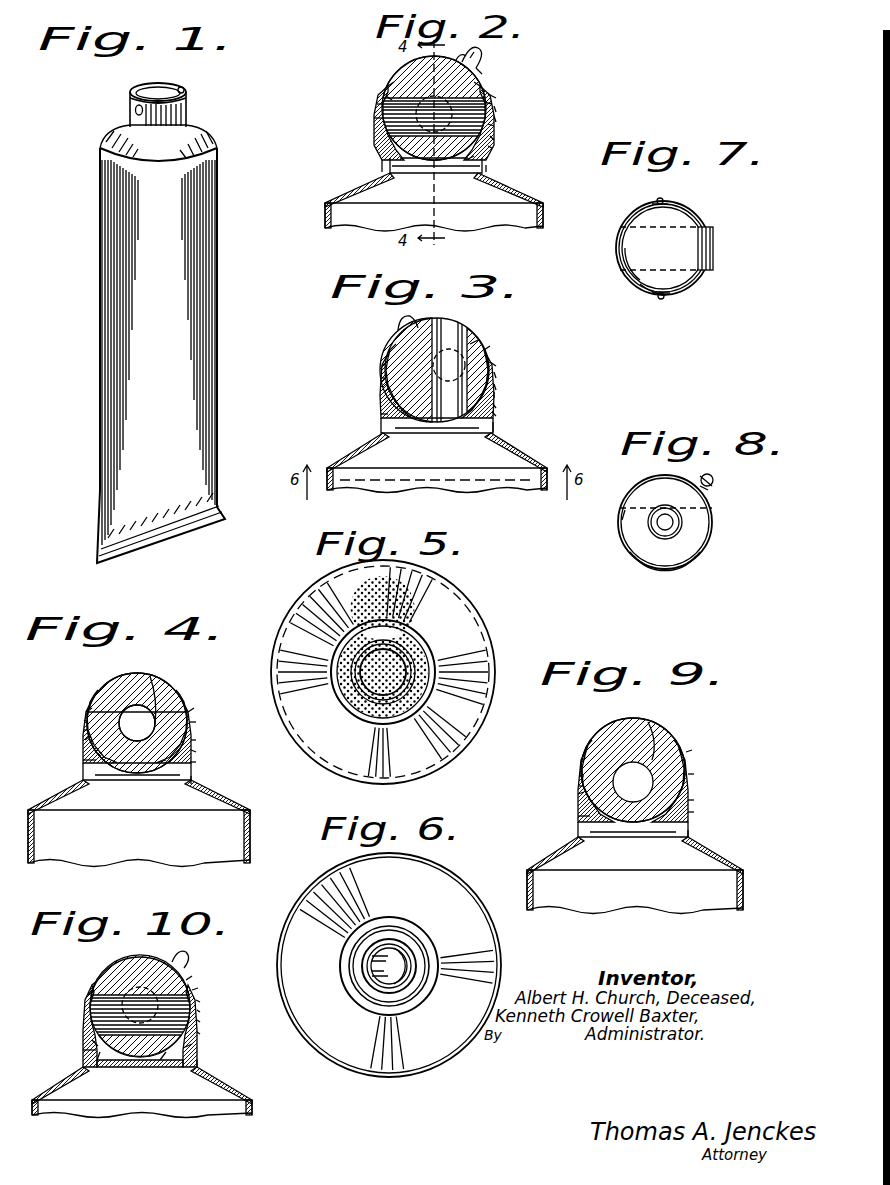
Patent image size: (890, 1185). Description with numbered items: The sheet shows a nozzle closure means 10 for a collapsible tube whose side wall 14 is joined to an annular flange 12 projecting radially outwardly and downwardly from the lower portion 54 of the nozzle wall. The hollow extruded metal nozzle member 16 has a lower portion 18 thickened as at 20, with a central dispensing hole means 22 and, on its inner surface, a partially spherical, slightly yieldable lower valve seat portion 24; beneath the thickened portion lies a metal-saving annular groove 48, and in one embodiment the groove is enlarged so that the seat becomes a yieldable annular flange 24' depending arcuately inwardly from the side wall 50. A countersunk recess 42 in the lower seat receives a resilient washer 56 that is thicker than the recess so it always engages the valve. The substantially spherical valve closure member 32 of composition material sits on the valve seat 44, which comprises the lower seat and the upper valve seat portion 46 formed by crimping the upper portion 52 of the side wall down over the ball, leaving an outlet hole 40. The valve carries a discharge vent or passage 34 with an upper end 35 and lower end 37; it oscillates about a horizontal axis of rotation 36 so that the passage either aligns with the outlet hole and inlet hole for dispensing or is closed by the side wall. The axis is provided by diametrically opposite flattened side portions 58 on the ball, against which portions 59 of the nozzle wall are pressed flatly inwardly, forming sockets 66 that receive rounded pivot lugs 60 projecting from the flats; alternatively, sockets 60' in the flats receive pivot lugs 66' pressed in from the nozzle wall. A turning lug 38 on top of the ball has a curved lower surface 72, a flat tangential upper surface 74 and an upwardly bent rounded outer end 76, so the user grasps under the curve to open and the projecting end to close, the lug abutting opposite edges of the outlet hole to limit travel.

In FIG. 1, the nozzle closure means 10 is at (188, 118).
In FIG. 2, the nozzle closure means 10 is at (378, 116).
In FIG. 3, the nozzle closure means 10 is at (382, 392).
In FIG. 4, the nozzle closure means 10 is at (83, 746).
In FIG. 5, the nozzle closure means 10 is at (364, 622).
In FIG. 9, the nozzle closure means 10 is at (578, 806).
In FIG. 10, the nozzle closure means 10 is at (84, 1022).
In FIG. 1, the annular flange 12 is at (215, 142).
In FIG. 2, the annular flange 12 is at (362, 187).
In FIG. 3, the annular flange 12 is at (362, 450).
In FIG. 4, the annular flange 12 is at (56, 792).
In FIG. 5, the annular flange 12 is at (312, 602).
In FIG. 6, the annular flange 12 is at (346, 892).
In FIG. 9, the annular flange 12 is at (560, 854).
In FIG. 10, the annular flange 12 is at (62, 1086).
In FIG. 1, the side wall 14 is at (100, 246).
In FIG. 2, the side wall 14 is at (330, 216).
In FIG. 3, the side wall 14 is at (330, 470).
In FIG. 4, the side wall 14 is at (30, 840).
In FIG. 6, the side wall 14 is at (334, 906).
In FIG. 9, the side wall 14 is at (530, 886).
In FIG. 10, the side wall 14 is at (40, 1116).
In FIG. 1, the nozzle member 16 is at (186, 108).
In FIG. 2, the nozzle member 16 is at (494, 108).
In FIG. 3, the nozzle member 16 is at (494, 374).
In FIG. 4, the nozzle member 16 is at (86, 716).
In FIG. 10, the nozzle member 16 is at (196, 1000).
In FIG. 2, the lower portion 18 is at (494, 137).
In FIG. 3, the lower portion 18 is at (496, 393).
In FIG. 4, the lower portion 18 is at (194, 740).
In FIG. 9, the lower portion 18 is at (690, 801).
In FIG. 2, the thickened portion 20 is at (492, 147).
In FIG. 3, the thickened portion 20 is at (496, 413).
In FIG. 4, the thickened portion 20 is at (194, 762).
In FIG. 9, the thickened portion 20 is at (690, 812).
In FIG. 2, the central dispensing hole means 22 is at (456, 170).
In FIG. 4, the central dispensing hole means 22 is at (162, 780).
In FIG. 10, the central dispensing hole means 22 is at (162, 1062).
In FIG. 2, the lower valve seat portion 24 is at (512, 121).
In FIG. 3, the lower valve seat portion 24 is at (532, 403).
In FIG. 4, the lower valve seat portion 24 is at (226, 747).
In FIG. 10, the lower valve seat portion 24 is at (227, 1035).
In FIG. 10, the annular flange (lower valve seat) 24' is at (231, 1054).
In FIG. 1, the valve closure member 32 is at (150, 86).
In FIG. 2, the valve closure member 32 is at (396, 72).
In FIG. 3, the valve closure member 32 is at (386, 360).
In FIG. 4, the valve closure member 32 is at (112, 674).
In FIG. 7, the valve closure member 32 is at (642, 218).
In FIG. 8, the valve closure member 32 is at (652, 492).
In FIG. 9, the valve closure member 32 is at (612, 728).
In FIG. 10, the valve closure member 32 is at (116, 966).
In FIG. 2, the discharge vent or passage 34 is at (386, 98).
In FIG. 3, the discharge vent or passage 34 is at (470, 346).
In FIG. 4, the discharge vent or passage 34 is at (152, 674).
In FIG. 6, the discharge vent or passage 34 is at (386, 976).
In FIG. 7, the discharge vent or passage 34 is at (636, 290).
In FIG. 8, the discharge vent or passage 34 is at (624, 524).
In FIG. 9, the discharge vent or passage 34 is at (670, 738).
In FIG. 10, the discharge vent or passage 34 is at (190, 972).
In FIG. 2, the upper end 35 is at (378, 106).
In FIG. 3, the upper end 35 is at (440, 422).
In FIG. 2, the axis of rotation 36 is at (380, 130).
In FIG. 4, the axis of rotation 36 is at (85, 722).
In FIG. 10, the axis of rotation 36 is at (86, 1002).
In FIG. 2, the lower end 37 is at (490, 102).
In FIG. 3, the lower end 37 is at (452, 324).
In FIG. 1, the turning lug 38 is at (182, 87).
In FIG. 2, the turning lug 38 is at (478, 52).
In FIG. 3, the turning lug 38 is at (402, 322).
In FIG. 7, the turning lug 38 is at (714, 250).
In FIG. 8, the turning lug 38 is at (714, 480).
In FIG. 10, the turning lug 38 is at (186, 956).
In FIG. 2, the outlet hole 40 is at (386, 84).
In FIG. 3, the outlet hole 40 is at (490, 350).
In FIG. 4, the outlet hole 40 is at (178, 692).
In FIG. 9, the outlet hole 40 is at (684, 756).
In FIG. 10, the outlet hole 40 is at (100, 978).
In FIG. 2, the countersunk recess 42 is at (488, 168).
In FIG. 3, the countersunk recess 42 is at (384, 418).
In FIG. 4, the countersunk recess 42 is at (96, 758).
In FIG. 5, the countersunk recess 42 is at (418, 648).
In FIG. 9, the countersunk recess 42 is at (584, 816).
In FIG. 10, the countersunk recess 42 is at (88, 1050).
In FIG. 2, the valve seat 44 is at (495, 117).
In FIG. 3, the valve seat 44 is at (496, 386).
In FIG. 10, the valve seat 44 is at (199, 1010).
In FIG. 2, the upper valve seat portion 46 is at (492, 96).
In FIG. 3, the upper valve seat portion 46 is at (494, 364).
In FIG. 4, the upper valve seat portion 46 is at (88, 708).
In FIG. 9, the upper valve seat portion 46 is at (582, 760).
In FIG. 10, the upper valve seat portion 46 is at (196, 986).
In FIG. 2, the annular groove 48 is at (478, 172).
In FIG. 3, the annular groove 48 is at (478, 430).
In FIG. 4, the annular groove 48 is at (100, 780).
In FIG. 6, the annular groove 48 is at (396, 928).
In FIG. 9, the annular groove 48 is at (672, 832).
In FIG. 10, the annular groove 48 is at (100, 1062).
In FIG. 2, the side wall 50 is at (376, 120).
In FIG. 3, the side wall 50 is at (381, 378).
In FIG. 5, the side wall 50 is at (344, 712).
In FIG. 10, the side wall 50 is at (199, 1020).
In FIG. 2, the upper portion 52 is at (490, 86).
In FIG. 3, the upper portion 52 is at (392, 348).
In FIG. 4, the upper portion 52 is at (96, 692).
In FIG. 9, the upper portion 52 is at (588, 746).
In FIG. 10, the upper portion 52 is at (94, 990).
In FIG. 2, the lower portion 54 is at (388, 166).
In FIG. 3, the lower portion 54 is at (495, 428).
In FIG. 4, the lower portion 54 is at (196, 782).
In FIG. 9, the lower portion 54 is at (692, 836).
In FIG. 10, the lower portion 54 is at (200, 1066).
In FIG. 2, the washer 56 is at (480, 160).
In FIG. 3, the washer 56 is at (394, 410).
In FIG. 4, the washer 56 is at (192, 770).
In FIG. 5, the washer 56 is at (412, 636).
In FIG. 9, the washer 56 is at (580, 776).
In FIG. 10, the washer 56 is at (92, 1044).
In FIG. 4, the flattened side portions 58 is at (86, 734).
In FIG. 7, the flattened side portions 58 is at (672, 204).
In FIG. 8, the flattened side portions 58 is at (678, 526).
In FIG. 9, the flattened side portions 58 is at (584, 790).
In FIG. 4, the flat portions 59 is at (190, 706).
In FIG. 9, the flat portions 59 is at (582, 782).
In FIG. 4, the pivot lugs 60 is at (137, 723).
In FIG. 7, the pivot lugs 60 is at (666, 248).
In FIG. 8, the pivot lugs 60 is at (694, 550).
In FIG. 9, the sockets 60' is at (715, 742).
In FIG. 4, the sockets 66 is at (218, 701).
In FIG. 9, the pivot lug 66' is at (719, 766).
In FIG. 2, the curved lower surface 72 is at (478, 70).
In FIG. 8, the curved lower surface 72 is at (712, 488).
In FIG. 2, the flat upper surface 74 is at (462, 58).
In FIG. 7, the flat upper surface 74 is at (692, 240).
In FIG. 8, the flat upper surface 74 is at (688, 480).
In FIG. 2, the rounded outer end 76 is at (472, 60).
In FIG. 8, the rounded outer end 76 is at (712, 476).